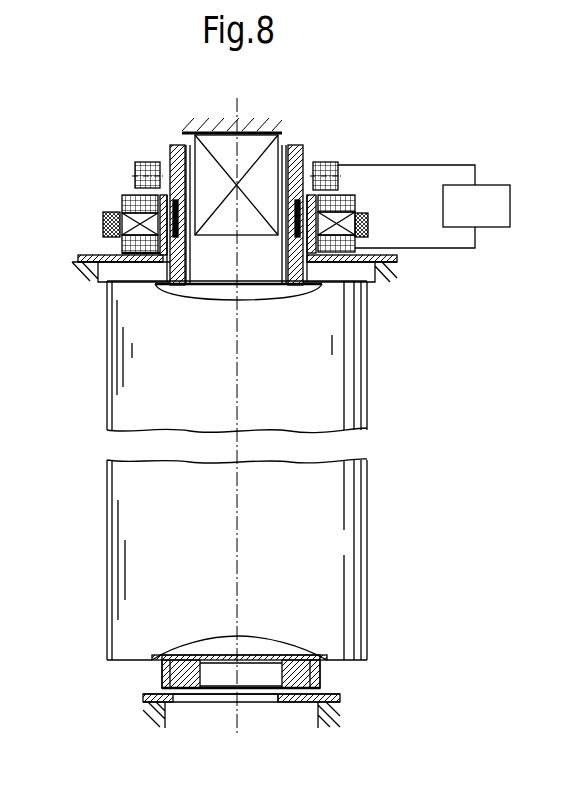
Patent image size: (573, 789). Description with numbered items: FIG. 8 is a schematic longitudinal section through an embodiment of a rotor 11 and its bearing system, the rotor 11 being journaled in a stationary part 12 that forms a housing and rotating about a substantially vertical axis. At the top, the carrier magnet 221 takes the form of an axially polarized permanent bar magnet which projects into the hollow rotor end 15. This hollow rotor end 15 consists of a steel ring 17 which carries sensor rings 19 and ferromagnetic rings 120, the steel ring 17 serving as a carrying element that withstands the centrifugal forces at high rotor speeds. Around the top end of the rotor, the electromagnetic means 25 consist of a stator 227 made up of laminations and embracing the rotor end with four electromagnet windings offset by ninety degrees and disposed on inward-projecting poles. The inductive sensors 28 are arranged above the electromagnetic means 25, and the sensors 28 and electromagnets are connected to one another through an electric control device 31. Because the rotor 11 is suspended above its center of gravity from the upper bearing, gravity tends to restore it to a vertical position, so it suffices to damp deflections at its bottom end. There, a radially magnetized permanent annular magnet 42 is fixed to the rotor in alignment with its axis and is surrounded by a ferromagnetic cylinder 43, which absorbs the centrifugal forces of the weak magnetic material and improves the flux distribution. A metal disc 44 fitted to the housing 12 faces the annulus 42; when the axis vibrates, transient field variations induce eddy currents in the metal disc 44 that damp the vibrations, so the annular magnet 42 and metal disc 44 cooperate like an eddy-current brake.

The rotor 11 is at (128, 377).
The stationary part 12 is at (393, 270).
The hollow rotor end 15 is at (297, 130).
The steel ring 17 is at (181, 143).
The sensor rings 19 is at (186, 148).
The electromagnetic means 25 is at (366, 204).
The inductive sensors 28 is at (145, 162).
The electric control device 31 is at (497, 197).
The permanent annular magnet 42 is at (195, 703).
The ferromagnetic cylinder 43 is at (160, 670).
The metal disc 44 is at (302, 700).
The ferromagnetic rings 120 is at (103, 225).
The carrier magnet 221 is at (253, 152).
The stator 227 is at (368, 226).